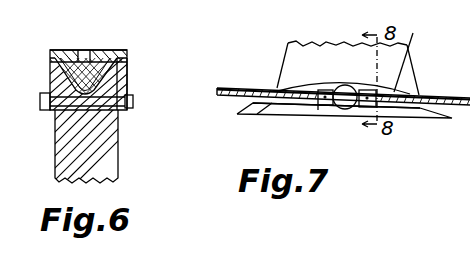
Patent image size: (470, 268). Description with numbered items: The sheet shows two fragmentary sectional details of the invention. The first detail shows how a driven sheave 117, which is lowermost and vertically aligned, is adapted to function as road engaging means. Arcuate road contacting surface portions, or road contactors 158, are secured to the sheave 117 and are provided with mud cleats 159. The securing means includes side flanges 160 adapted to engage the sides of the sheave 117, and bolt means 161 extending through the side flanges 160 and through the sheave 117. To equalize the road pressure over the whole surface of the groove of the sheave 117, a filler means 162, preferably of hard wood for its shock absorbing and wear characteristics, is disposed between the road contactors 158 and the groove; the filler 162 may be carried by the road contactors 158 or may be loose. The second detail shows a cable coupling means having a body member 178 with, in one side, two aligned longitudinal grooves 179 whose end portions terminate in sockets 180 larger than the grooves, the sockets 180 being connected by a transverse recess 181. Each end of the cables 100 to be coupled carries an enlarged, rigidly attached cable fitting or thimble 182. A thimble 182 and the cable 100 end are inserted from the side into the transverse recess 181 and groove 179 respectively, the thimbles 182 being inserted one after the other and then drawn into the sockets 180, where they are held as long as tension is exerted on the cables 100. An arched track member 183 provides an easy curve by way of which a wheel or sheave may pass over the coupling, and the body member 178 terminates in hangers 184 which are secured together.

In FIG. 7, the cable 100 is at (438, 98).
In FIG. 6, the sheave 117 is at (107, 163).
In FIG. 6, the road contactor 158 is at (56, 72).
In FIG. 6, the mud cleat 159 is at (105, 52).
In FIG. 6, the side flange 160 is at (123, 88).
In FIG. 6, the bolt means 161 is at (101, 107).
In FIG. 6, the filler means 162 is at (112, 75).
In FIG. 7, the body member 178 is at (286, 108).
In FIG. 7, the longitudinal groove 179 is at (308, 88).
In FIG. 7, the socket 180 is at (320, 102).
In FIG. 7, the transverse recess 181 is at (321, 114).
In FIG. 7, the cable fitting or thimble 182 is at (346, 86).
In FIG. 7, the arched track member 183 is at (425, 53).
In FIG. 7, the hanger 184 is at (290, 58).